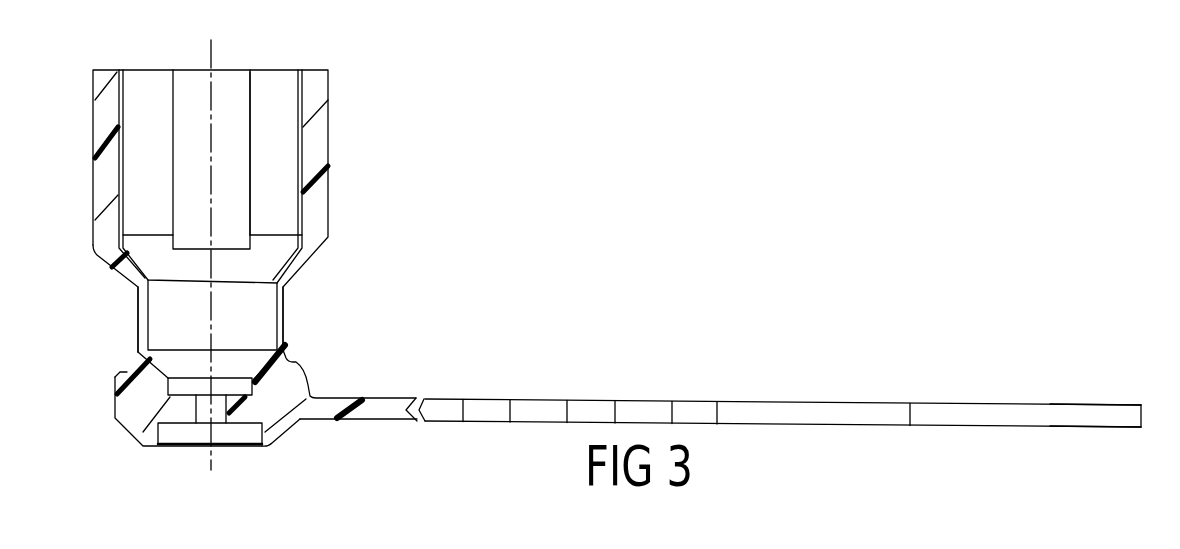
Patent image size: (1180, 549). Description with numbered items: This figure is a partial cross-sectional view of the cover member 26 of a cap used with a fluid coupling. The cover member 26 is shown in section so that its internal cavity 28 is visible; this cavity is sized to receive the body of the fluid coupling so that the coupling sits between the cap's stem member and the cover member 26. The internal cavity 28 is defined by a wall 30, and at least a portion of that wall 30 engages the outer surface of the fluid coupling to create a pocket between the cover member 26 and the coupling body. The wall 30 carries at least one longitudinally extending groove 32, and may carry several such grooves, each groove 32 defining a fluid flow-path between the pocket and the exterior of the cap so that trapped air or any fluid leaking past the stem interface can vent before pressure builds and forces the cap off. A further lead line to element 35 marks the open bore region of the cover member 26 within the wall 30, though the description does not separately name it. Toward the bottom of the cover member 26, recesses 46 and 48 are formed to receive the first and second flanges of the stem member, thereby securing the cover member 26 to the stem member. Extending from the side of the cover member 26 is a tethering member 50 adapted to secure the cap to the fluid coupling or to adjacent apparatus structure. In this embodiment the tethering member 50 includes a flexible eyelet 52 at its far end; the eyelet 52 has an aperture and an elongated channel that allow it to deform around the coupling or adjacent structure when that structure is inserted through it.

The cover member 26 is at (440, 285).
The internal cavity 28 is at (277, 305).
The wall 30 is at (301, 112).
The longitudinally extending groove 32 is at (222, 90).
The bore 35 is at (277, 90).
The recess 46 is at (262, 438).
The recess 48 is at (252, 366).
The tethering member 50 is at (647, 385).
The flexible eyelet 52 is at (1108, 412).